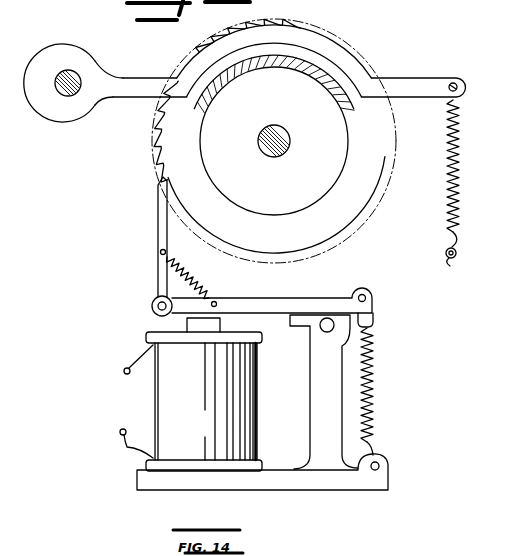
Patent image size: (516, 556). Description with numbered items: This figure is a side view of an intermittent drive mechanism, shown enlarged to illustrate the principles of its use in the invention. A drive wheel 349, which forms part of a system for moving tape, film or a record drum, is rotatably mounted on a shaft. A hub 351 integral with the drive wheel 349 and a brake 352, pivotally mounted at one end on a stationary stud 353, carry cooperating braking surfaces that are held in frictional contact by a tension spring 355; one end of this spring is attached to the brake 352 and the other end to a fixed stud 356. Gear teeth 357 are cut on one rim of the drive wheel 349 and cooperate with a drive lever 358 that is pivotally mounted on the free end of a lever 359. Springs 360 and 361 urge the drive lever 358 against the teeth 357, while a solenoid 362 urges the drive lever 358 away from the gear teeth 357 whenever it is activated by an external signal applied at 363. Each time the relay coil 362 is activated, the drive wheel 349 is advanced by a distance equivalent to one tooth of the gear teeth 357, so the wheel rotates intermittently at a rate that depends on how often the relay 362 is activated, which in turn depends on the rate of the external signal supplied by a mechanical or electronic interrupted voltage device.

The drive wheel 349 is at (367, 206).
The hub 351 is at (293, 213).
The brake 352 is at (396, 78).
The stationary stud 353 is at (63, 68).
The tension spring 355 is at (456, 175).
The fixed stud 356 is at (449, 264).
The gear teeth 357 is at (157, 158).
The drive lever 358 is at (162, 251).
The lever 359 is at (302, 297).
The spring 360 is at (292, 102).
The spring 361 is at (374, 392).
The solenoid 362 is at (155, 397).
The external signal 363 is at (125, 366).